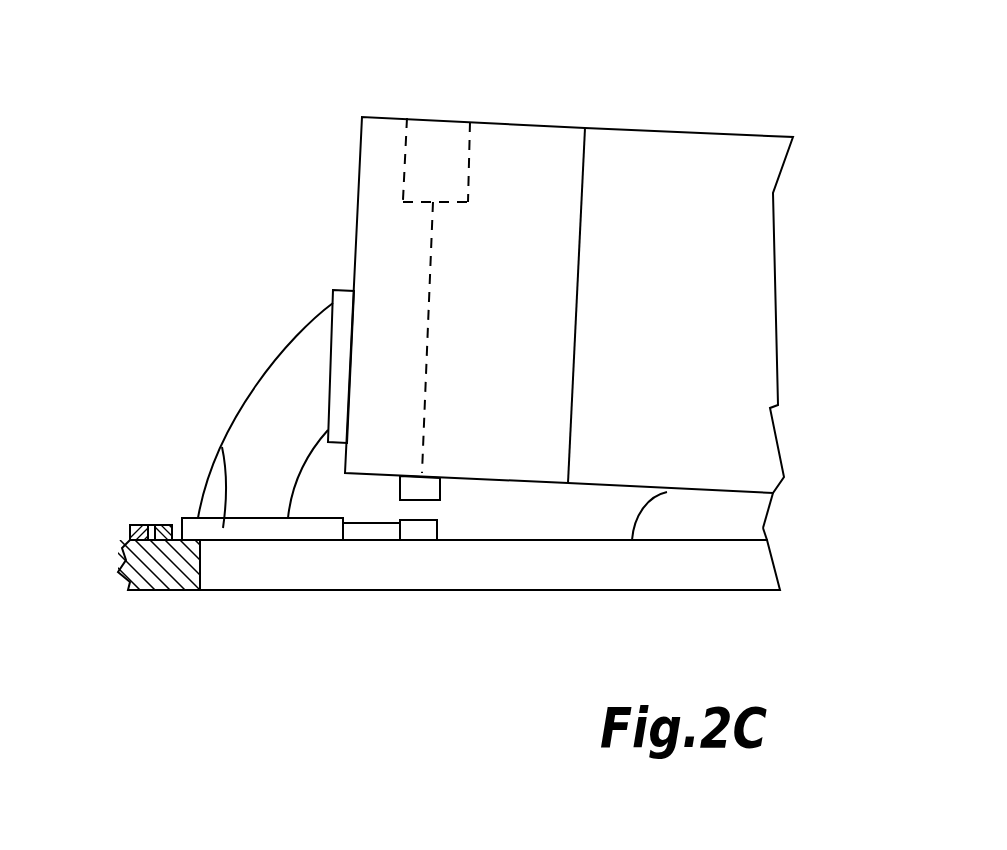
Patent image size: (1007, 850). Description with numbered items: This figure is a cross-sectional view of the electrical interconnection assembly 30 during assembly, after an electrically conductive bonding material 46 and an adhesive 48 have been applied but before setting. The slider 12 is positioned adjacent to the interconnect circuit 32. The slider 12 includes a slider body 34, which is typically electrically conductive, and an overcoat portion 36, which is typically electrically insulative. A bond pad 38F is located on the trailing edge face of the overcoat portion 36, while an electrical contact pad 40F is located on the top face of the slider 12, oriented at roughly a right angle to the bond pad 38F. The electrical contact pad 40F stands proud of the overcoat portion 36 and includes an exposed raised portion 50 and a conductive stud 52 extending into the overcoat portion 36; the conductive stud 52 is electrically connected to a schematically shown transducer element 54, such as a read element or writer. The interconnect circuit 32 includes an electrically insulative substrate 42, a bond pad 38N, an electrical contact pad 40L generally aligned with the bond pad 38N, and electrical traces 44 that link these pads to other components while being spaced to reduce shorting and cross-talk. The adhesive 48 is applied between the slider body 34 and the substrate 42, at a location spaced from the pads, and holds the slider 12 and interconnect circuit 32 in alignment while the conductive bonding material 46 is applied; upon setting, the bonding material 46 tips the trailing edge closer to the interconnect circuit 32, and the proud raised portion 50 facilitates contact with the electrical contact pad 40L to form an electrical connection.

The slider 12 is at (605, 290).
The electrical interconnection assembly 30 is at (134, 285).
The interconnect circuit 32 is at (358, 600).
The slider body 34 is at (733, 225).
The overcoat portion 36 is at (520, 163).
The bond pad 38F is at (332, 328).
The bond pad 38N is at (220, 447).
The electrical contact pad 40F is at (388, 500).
The electrical contact pad 40L is at (425, 528).
The electrically insulative substrate 42 is at (392, 572).
The electrical traces 44 is at (167, 523).
The electrically conductive bonding material 46 is at (257, 403).
The adhesive 48 is at (677, 522).
The raised portion 50 is at (422, 490).
The conductive stud 52 is at (420, 257).
The transducer element 54 is at (417, 143).